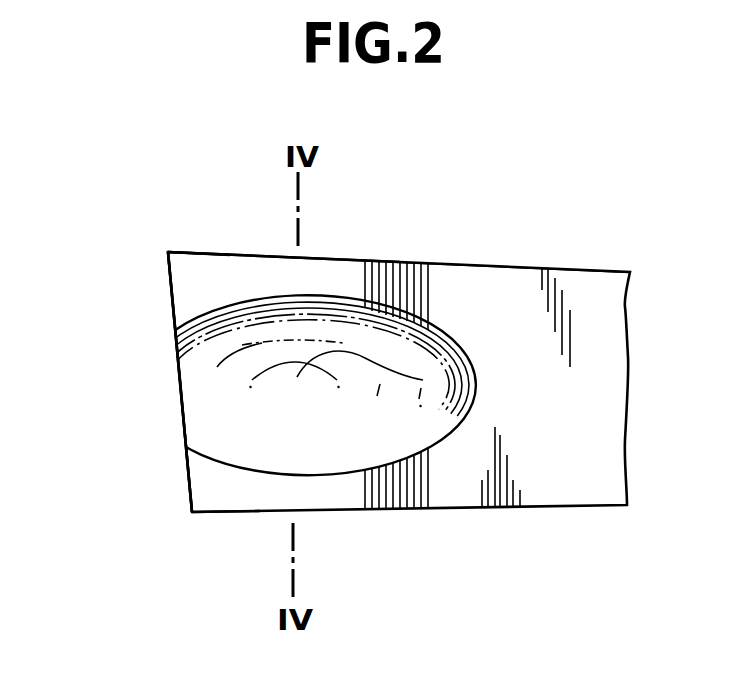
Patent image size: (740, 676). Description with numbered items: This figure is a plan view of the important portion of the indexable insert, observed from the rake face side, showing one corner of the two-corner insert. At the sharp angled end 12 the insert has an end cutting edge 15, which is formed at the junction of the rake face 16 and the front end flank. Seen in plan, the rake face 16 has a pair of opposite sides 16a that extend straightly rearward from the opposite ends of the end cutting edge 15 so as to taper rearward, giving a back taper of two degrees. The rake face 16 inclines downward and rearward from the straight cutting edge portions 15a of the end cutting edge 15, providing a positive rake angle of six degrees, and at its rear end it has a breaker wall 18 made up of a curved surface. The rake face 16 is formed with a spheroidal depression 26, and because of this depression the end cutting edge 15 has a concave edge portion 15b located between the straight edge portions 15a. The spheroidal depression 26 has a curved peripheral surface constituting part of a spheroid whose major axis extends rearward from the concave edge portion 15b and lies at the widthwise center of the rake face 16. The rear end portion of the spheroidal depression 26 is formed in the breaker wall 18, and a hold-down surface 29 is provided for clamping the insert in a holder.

The sharp angled end 12 is at (165, 251).
The end cutting edge 15 is at (172, 299).
The straight cutting edge portion 15a is at (170, 275).
The concave edge portion 15b is at (180, 401).
The rake face 16 is at (241, 275).
The opposite side 16a is at (213, 252).
The breaker wall 18 is at (357, 270).
The spheroidal depression 26 is at (440, 382).
The hold-down surface 29 is at (588, 300).